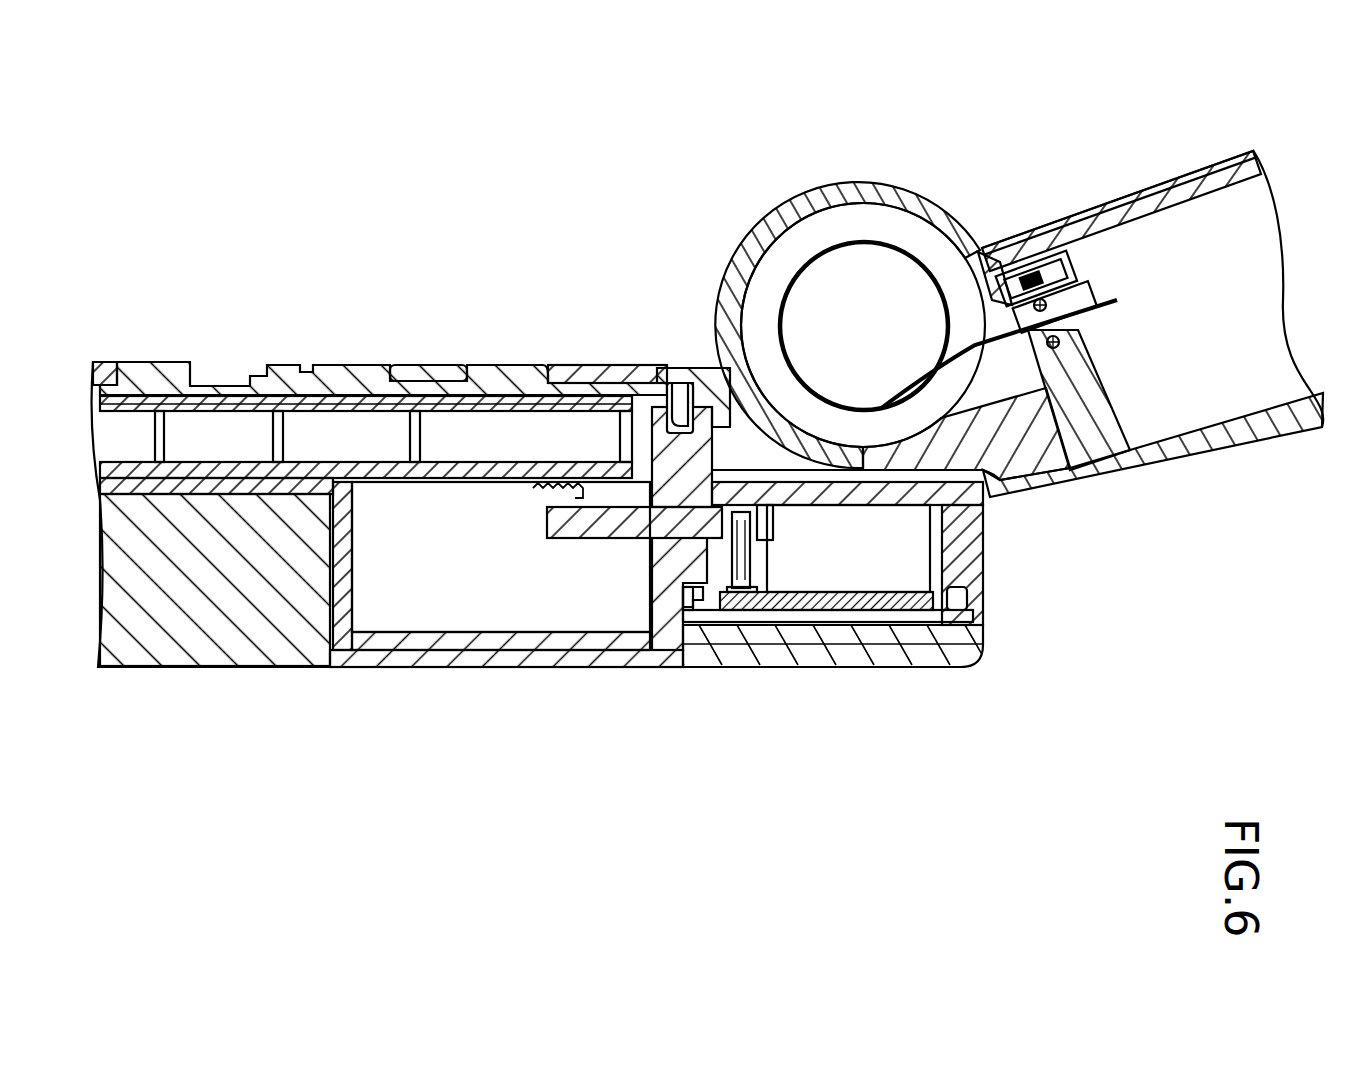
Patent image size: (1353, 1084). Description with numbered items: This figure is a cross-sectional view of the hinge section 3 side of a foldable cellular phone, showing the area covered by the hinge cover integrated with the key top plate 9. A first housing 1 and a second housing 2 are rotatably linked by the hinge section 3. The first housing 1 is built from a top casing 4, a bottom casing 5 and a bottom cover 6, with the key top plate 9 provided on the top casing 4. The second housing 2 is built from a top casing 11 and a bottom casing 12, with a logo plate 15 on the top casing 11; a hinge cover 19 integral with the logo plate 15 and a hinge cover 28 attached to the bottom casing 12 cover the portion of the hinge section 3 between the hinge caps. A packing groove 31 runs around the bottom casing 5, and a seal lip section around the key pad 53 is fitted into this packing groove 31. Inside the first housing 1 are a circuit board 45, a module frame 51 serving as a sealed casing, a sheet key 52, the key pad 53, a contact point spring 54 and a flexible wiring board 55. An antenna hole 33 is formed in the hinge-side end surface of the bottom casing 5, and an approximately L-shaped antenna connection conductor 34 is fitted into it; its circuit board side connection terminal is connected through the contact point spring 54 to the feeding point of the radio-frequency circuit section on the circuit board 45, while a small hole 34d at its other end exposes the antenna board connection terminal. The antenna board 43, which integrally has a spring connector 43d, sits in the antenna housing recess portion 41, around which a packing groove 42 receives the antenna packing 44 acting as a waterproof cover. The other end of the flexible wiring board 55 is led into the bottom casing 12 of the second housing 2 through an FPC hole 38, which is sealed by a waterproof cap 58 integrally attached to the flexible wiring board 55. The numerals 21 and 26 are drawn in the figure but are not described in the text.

The first housing 1 is at (121, 672).
The second housing 2 is at (1282, 462).
The hinge section 3 is at (958, 195).
The top casing 4 is at (110, 373).
The bottom casing 5 is at (445, 640).
The bottom cover 6 is at (498, 648).
The key top plate 9 is at (628, 378).
The top casing 11 is at (1243, 180).
The bottom casing 12 is at (1180, 457).
The logo plate 15 is at (1197, 168).
The hinge cover 19 is at (885, 185).
The main body block 21 is at (225, 635).
The lower housing plate 26 is at (900, 655).
The hinge cover 28 is at (1043, 458).
The packing groove 31 is at (676, 420).
The antenna hole 33 is at (655, 542).
The antenna connection conductor 34 is at (598, 540).
The small hole 34d is at (775, 525).
The FPC hole 38 is at (1060, 338).
The antenna housing recess portion 41 is at (985, 545).
The packing groove 42 is at (700, 596).
The antenna board 43 is at (765, 612).
The spring connector 43d is at (752, 580).
The antenna packing 44 is at (835, 616).
The circuit board 45 is at (110, 468).
The module frame 51 is at (400, 410).
The sheet key 52 is at (333, 403).
The key pad 53 is at (478, 380).
The contact point spring 54 is at (537, 490).
The flexible wiring board 55 is at (815, 255).
The waterproof cap 58 is at (1072, 288).